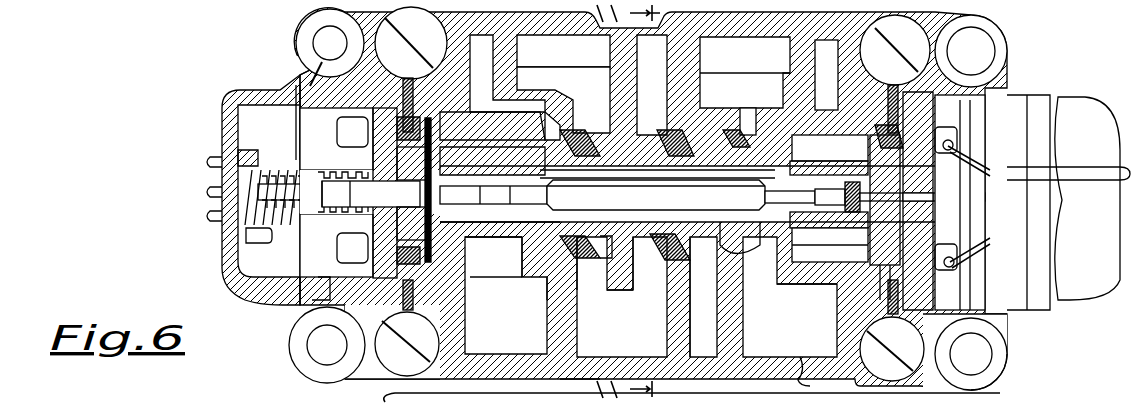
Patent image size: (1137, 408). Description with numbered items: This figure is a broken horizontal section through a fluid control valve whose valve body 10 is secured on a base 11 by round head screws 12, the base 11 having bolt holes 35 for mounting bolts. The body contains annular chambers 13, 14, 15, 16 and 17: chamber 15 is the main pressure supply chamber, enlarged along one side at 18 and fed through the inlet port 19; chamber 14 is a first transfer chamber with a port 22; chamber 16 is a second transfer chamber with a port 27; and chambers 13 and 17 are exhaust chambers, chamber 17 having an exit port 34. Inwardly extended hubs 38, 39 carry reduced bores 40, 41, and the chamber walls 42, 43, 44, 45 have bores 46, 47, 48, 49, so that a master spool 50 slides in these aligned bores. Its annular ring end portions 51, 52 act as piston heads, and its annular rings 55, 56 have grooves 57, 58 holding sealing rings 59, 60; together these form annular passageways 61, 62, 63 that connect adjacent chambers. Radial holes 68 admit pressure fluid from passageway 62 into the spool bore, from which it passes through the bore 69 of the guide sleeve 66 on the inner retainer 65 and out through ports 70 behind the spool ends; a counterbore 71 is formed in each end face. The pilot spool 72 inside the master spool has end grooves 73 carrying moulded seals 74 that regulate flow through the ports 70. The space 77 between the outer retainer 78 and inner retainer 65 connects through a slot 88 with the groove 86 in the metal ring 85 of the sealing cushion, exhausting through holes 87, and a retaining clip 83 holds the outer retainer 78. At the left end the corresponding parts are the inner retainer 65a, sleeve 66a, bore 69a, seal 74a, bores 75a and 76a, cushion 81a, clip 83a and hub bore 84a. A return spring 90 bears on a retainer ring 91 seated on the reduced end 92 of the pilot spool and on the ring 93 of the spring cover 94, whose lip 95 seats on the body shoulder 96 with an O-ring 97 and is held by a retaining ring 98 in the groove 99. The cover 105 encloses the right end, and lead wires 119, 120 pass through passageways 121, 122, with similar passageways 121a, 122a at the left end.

The valve body 10 is at (765, 382).
The base 11 is at (1006, 370).
The round head screws 12 is at (404, 60).
The annular chamber 13 is at (506, 295).
The annular chamber 14 is at (563, 100).
The annular chamber 15 is at (622, 297).
The annular chamber 16 is at (703, 297).
The annular chamber 17 is at (790, 297).
The enlargement of chamber 18 is at (598, 304).
The inlet port 19 is at (592, 360).
The port 22 is at (540, 38).
The port 27 is at (720, 40).
The exit port 34 is at (814, 380).
The bolt holes 35 is at (314, 44).
The hub 38 is at (495, 277).
The hub 39 is at (800, 284).
The hub bore 40 is at (486, 258).
The hub bore 41 is at (840, 260).
The chamber wall 42 is at (540, 280).
The chamber wall 43 is at (607, 272).
The chamber wall 44 is at (667, 270).
The chamber wall 45 is at (722, 274).
The axial bore 46 is at (550, 136).
The axial bore 47 is at (636, 135).
The axial bore 48 is at (716, 130).
The axial bore 49 is at (745, 136).
The master spool 50 is at (696, 218).
The annular ring end portion 51 is at (472, 136).
The annular ring end portion 52 is at (816, 146).
The annular ring 55 is at (548, 250).
The annular ring 56 is at (722, 134).
The groove 57 is at (580, 236).
The groove 58 is at (660, 234).
The annular sealing ring 59 is at (582, 138).
The annular sealing ring 60 is at (666, 134).
The annular passageway 61 is at (546, 224).
The annular passageway 62 is at (606, 236).
The annular passageway 63 is at (726, 236).
The inner retainer bushing 65 is at (885, 200).
The inner retainer bushing 65a is at (412, 193).
The guide sleeve 66 is at (830, 243).
The guide sleeve 66a is at (492, 195).
The radial holes 68 is at (622, 162).
The sleeve bore 69 is at (806, 186).
The sleeve bore 69a is at (523, 195).
The radial ports 70 is at (858, 180).
The counterbore 71 is at (806, 164).
The pilot spool 72 is at (656, 188).
The groove 73 is at (834, 199).
The moulded seal 74 is at (864, 197).
The moulded seal 74a is at (493, 195).
The bore 75a is at (366, 194).
The reduced bore 76a is at (371, 194).
The space 77 is at (922, 201).
The outer annular retainer 78 is at (928, 172).
The annular sealing cushion 81a is at (426, 264).
The retaining clip 83 is at (950, 270).
The retaining clip 83a is at (370, 222).
The axial bore 84a is at (356, 172).
The metal ring 85 is at (884, 268).
The annular groove 86 is at (900, 270).
The holes 87 is at (413, 96).
The slot 88 is at (920, 128).
The return spring 90 is at (262, 228).
The retainer ring 91 is at (300, 172).
The reduced left end 92 is at (284, 184).
The ring 93 is at (250, 152).
The spring cover 94 is at (222, 114).
The annular lip 95 is at (305, 78).
The shoulder 96 is at (322, 290).
The O-ring 97 is at (283, 305).
The retaining ring 98 is at (324, 62).
The groove 99 is at (296, 110).
The cover 105 is at (1084, 93).
The lead wire 119 is at (980, 164).
The lead wire 120 is at (978, 250).
The passageway 121 is at (956, 134).
The passageway 121a is at (338, 126).
The passageway 122 is at (950, 246).
The passageway 122a is at (338, 253).